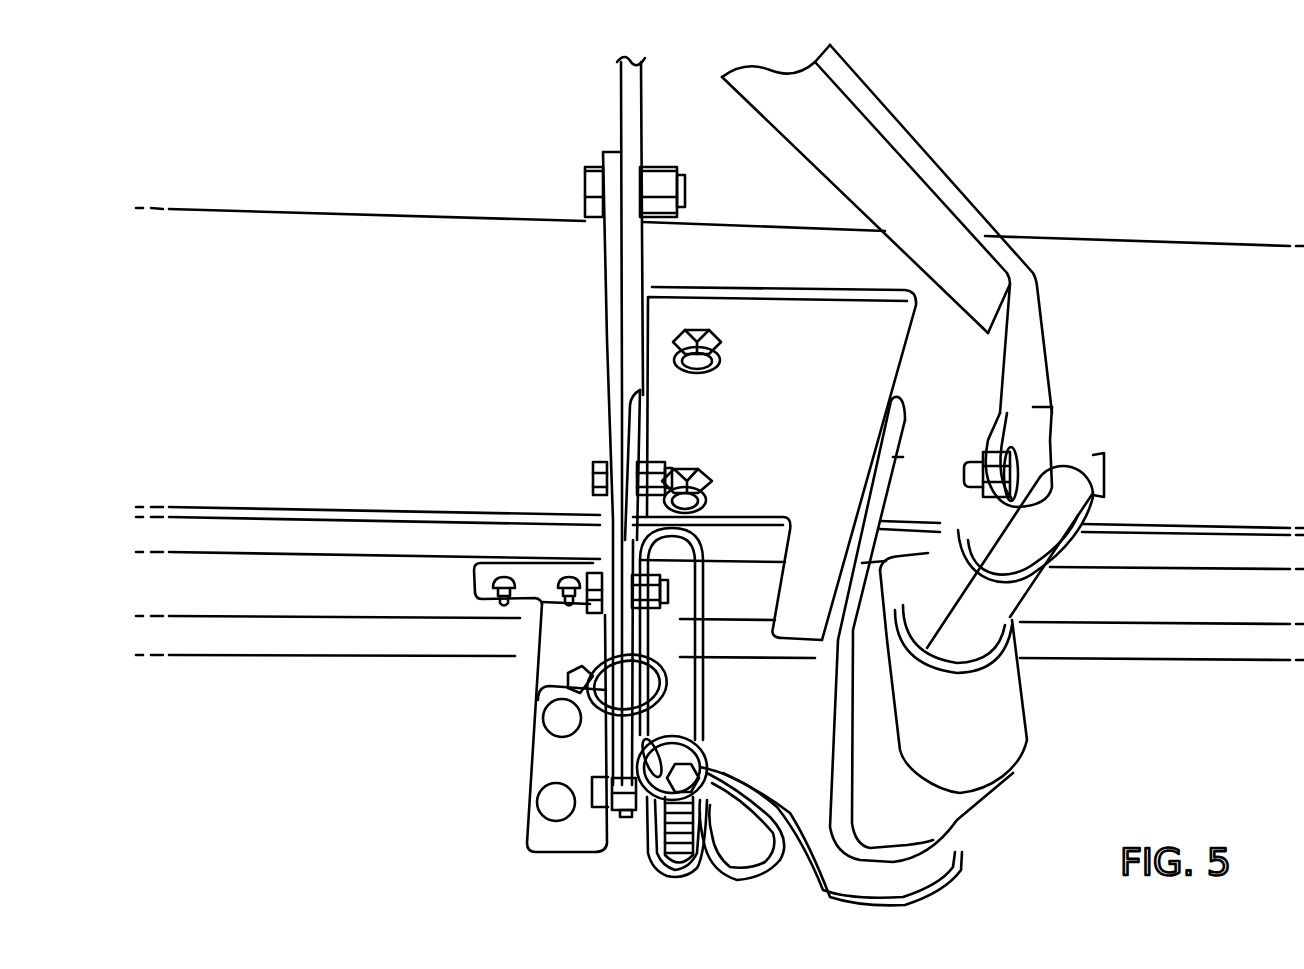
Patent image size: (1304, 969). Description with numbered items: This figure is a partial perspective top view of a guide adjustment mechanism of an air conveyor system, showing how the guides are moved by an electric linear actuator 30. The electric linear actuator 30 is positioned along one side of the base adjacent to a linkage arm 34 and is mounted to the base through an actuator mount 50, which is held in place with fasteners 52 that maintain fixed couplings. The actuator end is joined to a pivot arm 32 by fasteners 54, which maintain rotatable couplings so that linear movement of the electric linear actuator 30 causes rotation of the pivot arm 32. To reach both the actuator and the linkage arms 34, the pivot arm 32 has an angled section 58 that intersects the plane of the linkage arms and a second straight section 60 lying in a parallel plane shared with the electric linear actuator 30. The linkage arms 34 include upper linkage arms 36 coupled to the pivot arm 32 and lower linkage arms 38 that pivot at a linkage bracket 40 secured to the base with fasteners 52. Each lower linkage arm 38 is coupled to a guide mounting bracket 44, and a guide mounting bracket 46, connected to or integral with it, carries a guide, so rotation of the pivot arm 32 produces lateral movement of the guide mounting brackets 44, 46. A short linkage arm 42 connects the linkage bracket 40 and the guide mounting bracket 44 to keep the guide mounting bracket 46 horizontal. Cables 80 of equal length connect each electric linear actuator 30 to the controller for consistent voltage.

The electric linear actuator 30 is at (1062, 598).
The pivot arm 32 is at (988, 240).
The linkage arms 34 is at (621, 124).
The upper linkage arm 36 is at (641, 117).
The lower linkage arm 38 is at (614, 402).
The linkage bracket 40 is at (627, 527).
The short linkage arm 42 is at (608, 767).
The guide mounting bracket 44 is at (550, 762).
The guide mounting bracket 46 is at (552, 654).
The actuator mount 50 is at (848, 396).
The fastener 52 is at (712, 344).
The fastener 54 is at (590, 193).
The angled section 58 is at (917, 156).
The second straight section 60 is at (1037, 355).
The cable 80 is at (803, 868).